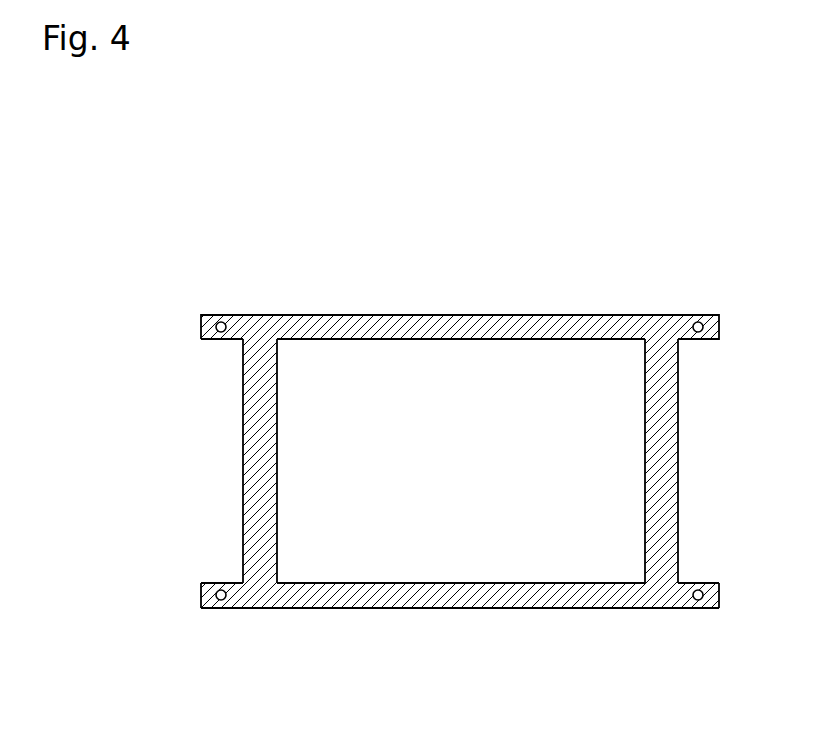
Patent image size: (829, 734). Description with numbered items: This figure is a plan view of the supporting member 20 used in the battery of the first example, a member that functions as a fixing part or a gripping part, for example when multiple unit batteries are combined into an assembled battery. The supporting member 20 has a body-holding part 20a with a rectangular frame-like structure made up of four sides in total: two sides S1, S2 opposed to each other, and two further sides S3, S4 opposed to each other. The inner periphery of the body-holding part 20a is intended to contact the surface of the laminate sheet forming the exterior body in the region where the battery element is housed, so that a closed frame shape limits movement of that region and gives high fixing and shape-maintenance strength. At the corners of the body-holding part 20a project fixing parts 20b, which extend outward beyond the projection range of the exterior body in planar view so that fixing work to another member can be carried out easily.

The supporting member 20 is at (414, 431).
The body-holding part 20a is at (503, 609).
The fixing part 20b is at (222, 315).
The side S1 is at (436, 314).
The side S2 is at (404, 609).
The side S3 is at (678, 455).
The side S4 is at (243, 454).